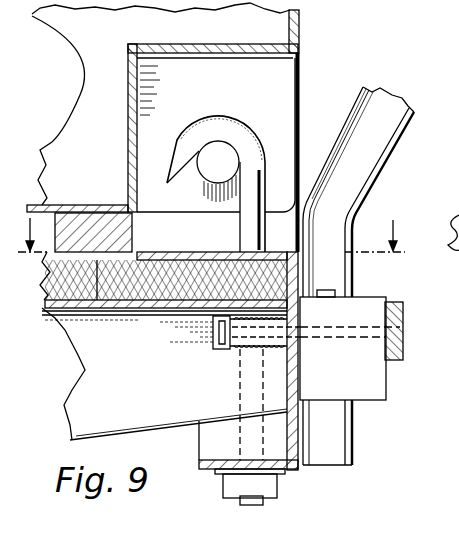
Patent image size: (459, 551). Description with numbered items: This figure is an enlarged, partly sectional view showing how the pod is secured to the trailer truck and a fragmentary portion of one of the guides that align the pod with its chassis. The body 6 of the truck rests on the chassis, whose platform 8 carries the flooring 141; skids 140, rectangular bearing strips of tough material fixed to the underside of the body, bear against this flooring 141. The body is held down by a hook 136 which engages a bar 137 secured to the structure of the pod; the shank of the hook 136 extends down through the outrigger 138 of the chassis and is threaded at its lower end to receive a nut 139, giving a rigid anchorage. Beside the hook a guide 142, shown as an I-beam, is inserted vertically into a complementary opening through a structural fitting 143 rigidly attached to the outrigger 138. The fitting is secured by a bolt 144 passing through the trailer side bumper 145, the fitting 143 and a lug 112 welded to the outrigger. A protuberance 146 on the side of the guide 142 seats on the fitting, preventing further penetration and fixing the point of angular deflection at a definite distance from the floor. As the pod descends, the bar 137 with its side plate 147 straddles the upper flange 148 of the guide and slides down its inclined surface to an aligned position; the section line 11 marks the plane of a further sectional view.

The body 6 is at (277, 27).
The platform 8 is at (203, 253).
The section line 11- 11 is at (211, 248).
The lug 112 is at (237, 348).
The hook 136 is at (246, 133).
The bar 137 is at (211, 168).
The outrigger 138 is at (100, 376).
The nut 139 is at (237, 490).
The skid 140 is at (123, 238).
The flooring 141 is at (179, 254).
The guide 142 is at (333, 148).
The structural fitting 143 is at (378, 383).
The bolt 144 is at (353, 334).
The trailer side bumper 145 is at (403, 348).
The protuberance 146 is at (321, 290).
The side plate 147 is at (290, 130).
The upper flange 148 is at (362, 102).